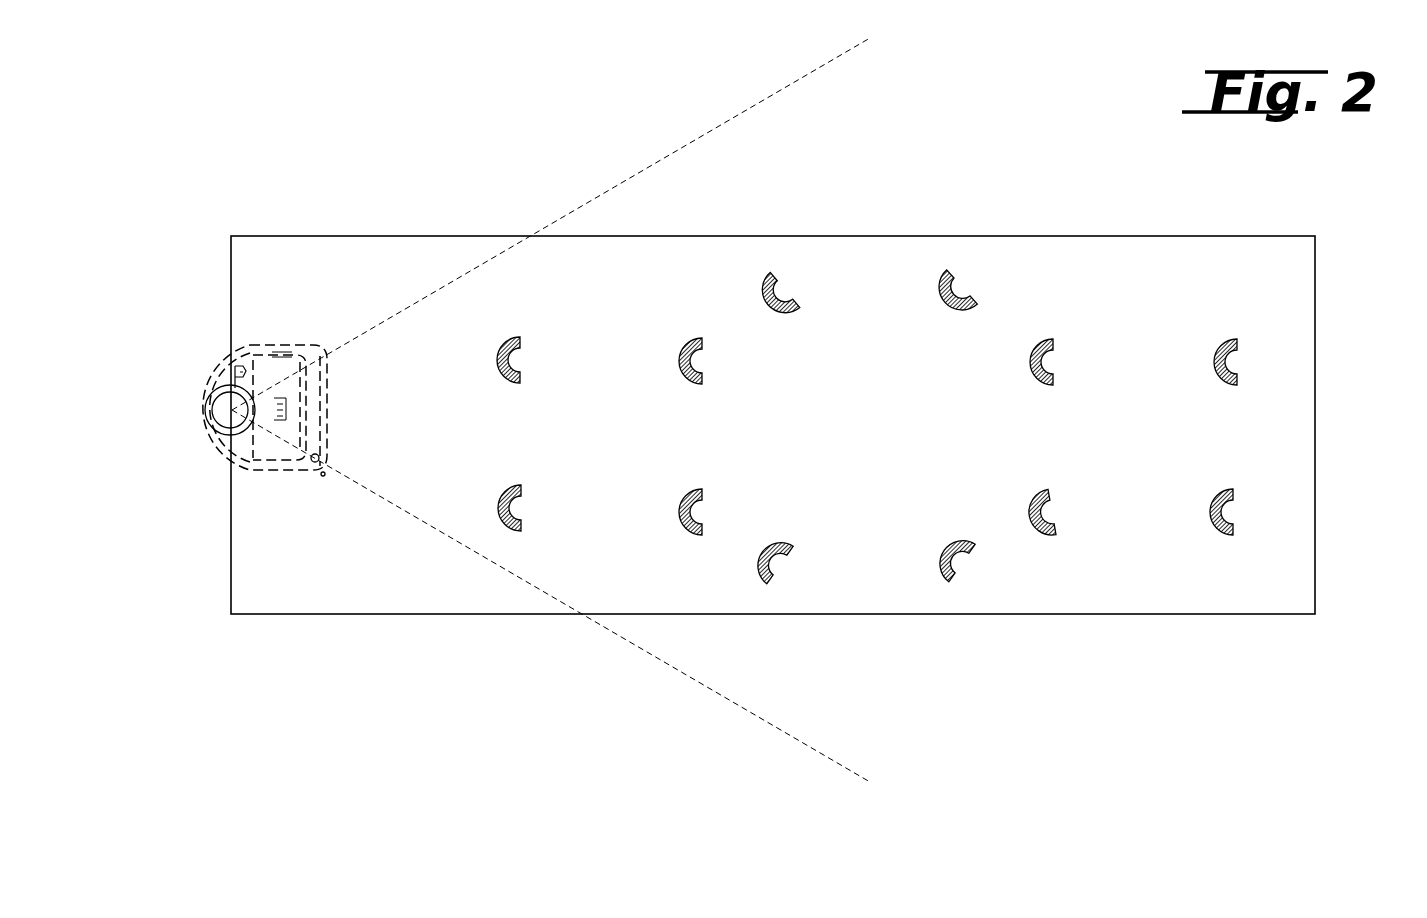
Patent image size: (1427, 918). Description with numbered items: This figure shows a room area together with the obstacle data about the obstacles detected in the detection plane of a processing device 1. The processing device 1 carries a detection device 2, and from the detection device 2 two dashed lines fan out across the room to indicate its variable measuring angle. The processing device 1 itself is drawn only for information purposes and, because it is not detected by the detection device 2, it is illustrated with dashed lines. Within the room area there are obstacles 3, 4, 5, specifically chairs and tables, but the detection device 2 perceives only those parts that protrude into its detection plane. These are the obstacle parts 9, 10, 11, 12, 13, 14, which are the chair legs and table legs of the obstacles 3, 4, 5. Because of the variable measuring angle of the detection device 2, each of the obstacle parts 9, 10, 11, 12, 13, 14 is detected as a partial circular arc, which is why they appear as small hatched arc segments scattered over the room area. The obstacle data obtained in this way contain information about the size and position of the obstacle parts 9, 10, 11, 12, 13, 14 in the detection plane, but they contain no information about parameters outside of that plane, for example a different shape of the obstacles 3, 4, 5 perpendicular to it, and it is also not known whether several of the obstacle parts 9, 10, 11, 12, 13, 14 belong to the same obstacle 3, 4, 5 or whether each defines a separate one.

The processing device 1 is at (267, 333).
The detection device 2 is at (215, 405).
The obstacle 3 is at (591, 546).
The obstacle 4 is at (864, 595).
The obstacle 5 is at (1143, 547).
The obstacle part 9 is at (513, 358).
The obstacle part 10 is at (515, 505).
The obstacle part 11 is at (946, 288).
The obstacle part 12 is at (945, 559).
The obstacle part 13 is at (1230, 362).
The obstacle part 14 is at (1228, 512).